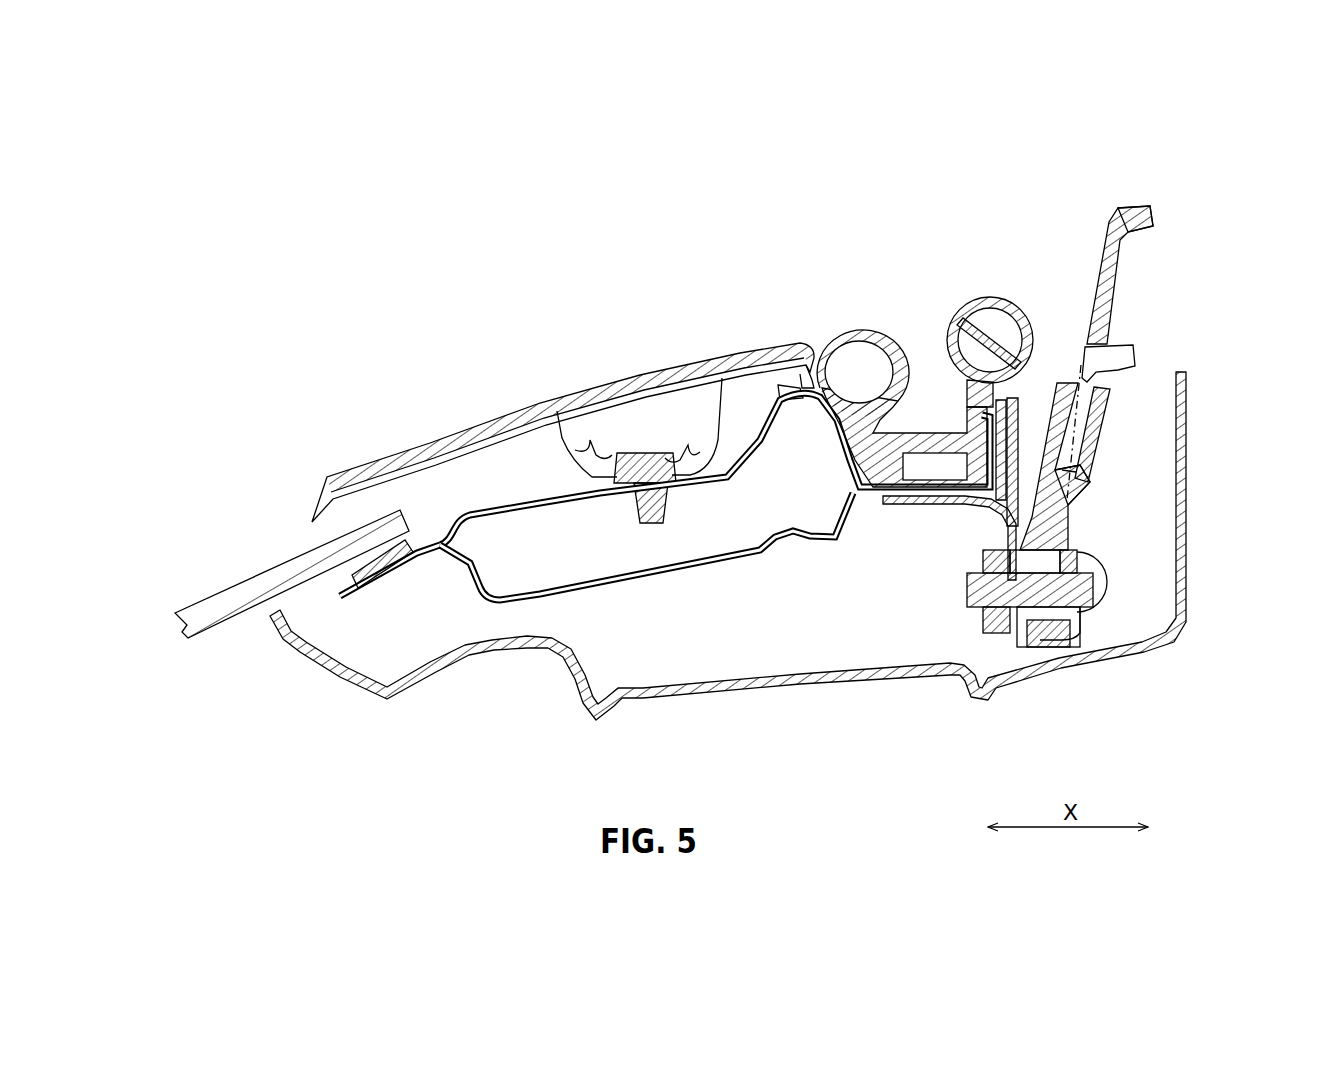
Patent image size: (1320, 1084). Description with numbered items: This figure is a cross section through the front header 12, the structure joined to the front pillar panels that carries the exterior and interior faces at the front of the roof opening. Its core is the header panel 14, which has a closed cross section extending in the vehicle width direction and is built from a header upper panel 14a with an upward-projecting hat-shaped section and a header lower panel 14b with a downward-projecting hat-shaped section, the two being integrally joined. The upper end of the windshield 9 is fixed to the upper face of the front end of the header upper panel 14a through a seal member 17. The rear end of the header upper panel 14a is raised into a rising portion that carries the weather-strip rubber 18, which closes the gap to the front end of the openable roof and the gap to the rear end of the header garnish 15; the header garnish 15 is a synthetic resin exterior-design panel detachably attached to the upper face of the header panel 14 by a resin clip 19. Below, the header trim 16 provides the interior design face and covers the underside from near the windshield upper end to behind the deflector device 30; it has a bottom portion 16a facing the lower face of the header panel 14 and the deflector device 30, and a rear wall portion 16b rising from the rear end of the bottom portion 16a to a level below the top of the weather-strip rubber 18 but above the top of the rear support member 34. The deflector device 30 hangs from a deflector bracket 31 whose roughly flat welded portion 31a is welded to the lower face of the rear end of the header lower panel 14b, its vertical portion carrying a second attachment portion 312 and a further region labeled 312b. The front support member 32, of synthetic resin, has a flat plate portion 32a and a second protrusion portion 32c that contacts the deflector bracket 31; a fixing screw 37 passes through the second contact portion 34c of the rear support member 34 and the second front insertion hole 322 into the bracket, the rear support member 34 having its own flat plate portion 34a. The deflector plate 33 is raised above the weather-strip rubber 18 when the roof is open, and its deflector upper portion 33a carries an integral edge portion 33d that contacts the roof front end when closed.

The front header 12 is at (325, 365).
The header garnish 15 is at (490, 421).
The resin clip 19 is at (641, 452).
The header panel 14 is at (490, 583).
The header upper panel 14a is at (543, 515).
The header lower panel 14b is at (622, 592).
The seal member 17 is at (336, 583).
The windshield 9 is at (200, 602).
The header trim 16 is at (331, 672).
The bottom portion 16a is at (682, 700).
The rear wall portion 16b is at (1183, 516).
The weather-strip rubber 18 is at (863, 329).
The deflector device 30 is at (1020, 204).
The deflector bracket 31 is at (895, 507).
The welded portion 31a is at (938, 510).
The second attachment portion 312 is at (973, 695).
The bracket flange 312b is at (982, 633).
The front support member 32 is at (1054, 378).
The flat plate portion 32a is at (1052, 490).
The second protrusion portion 32c is at (1040, 649).
The second front insertion hole 322 is at (1053, 568).
The deflector plate 33 is at (1106, 217).
The deflector upper portion 33a is at (1122, 272).
The edge portion 33d is at (1145, 212).
The rear support member 34 is at (1108, 437).
The flat plate portion 34a is at (1096, 448).
The second contact portion 34c is at (1080, 633).
The fixing screw 37 is at (1100, 608).